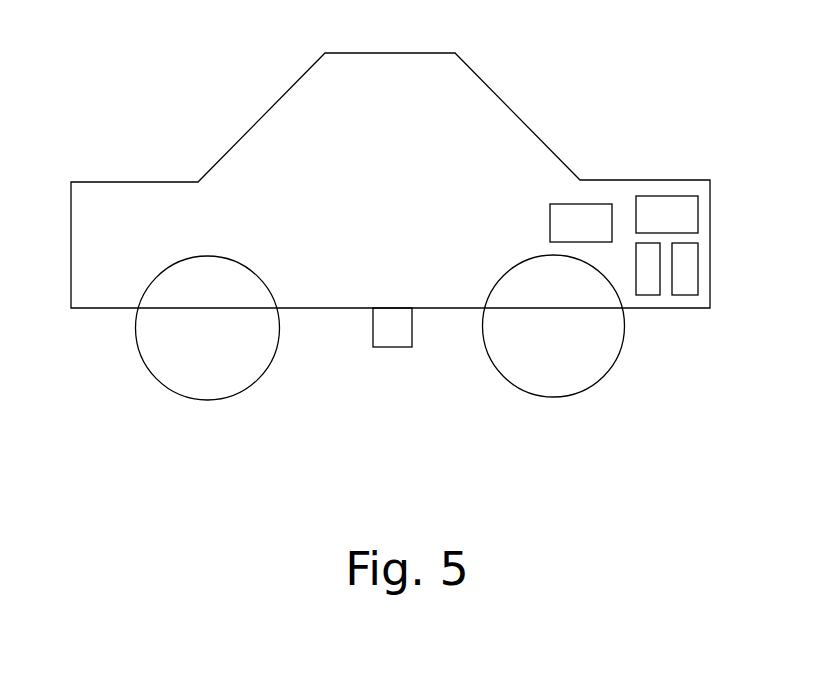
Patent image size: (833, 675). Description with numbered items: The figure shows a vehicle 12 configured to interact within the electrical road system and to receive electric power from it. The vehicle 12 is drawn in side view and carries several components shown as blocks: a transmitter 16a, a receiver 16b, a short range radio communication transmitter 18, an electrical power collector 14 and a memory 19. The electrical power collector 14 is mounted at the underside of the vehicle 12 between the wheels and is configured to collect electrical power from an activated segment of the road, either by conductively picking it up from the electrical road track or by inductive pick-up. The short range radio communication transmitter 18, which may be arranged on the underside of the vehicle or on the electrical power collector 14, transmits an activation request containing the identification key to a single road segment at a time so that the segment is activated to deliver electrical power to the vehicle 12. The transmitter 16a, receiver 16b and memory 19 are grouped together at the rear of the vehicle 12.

The vehicle 12 is at (307, 110).
The electrical power collector 14 is at (392, 330).
The transmitter 16a is at (666, 208).
The receiver 16b is at (690, 268).
The short range radio communication transmitter 18 is at (648, 270).
The memory 19 is at (590, 215).